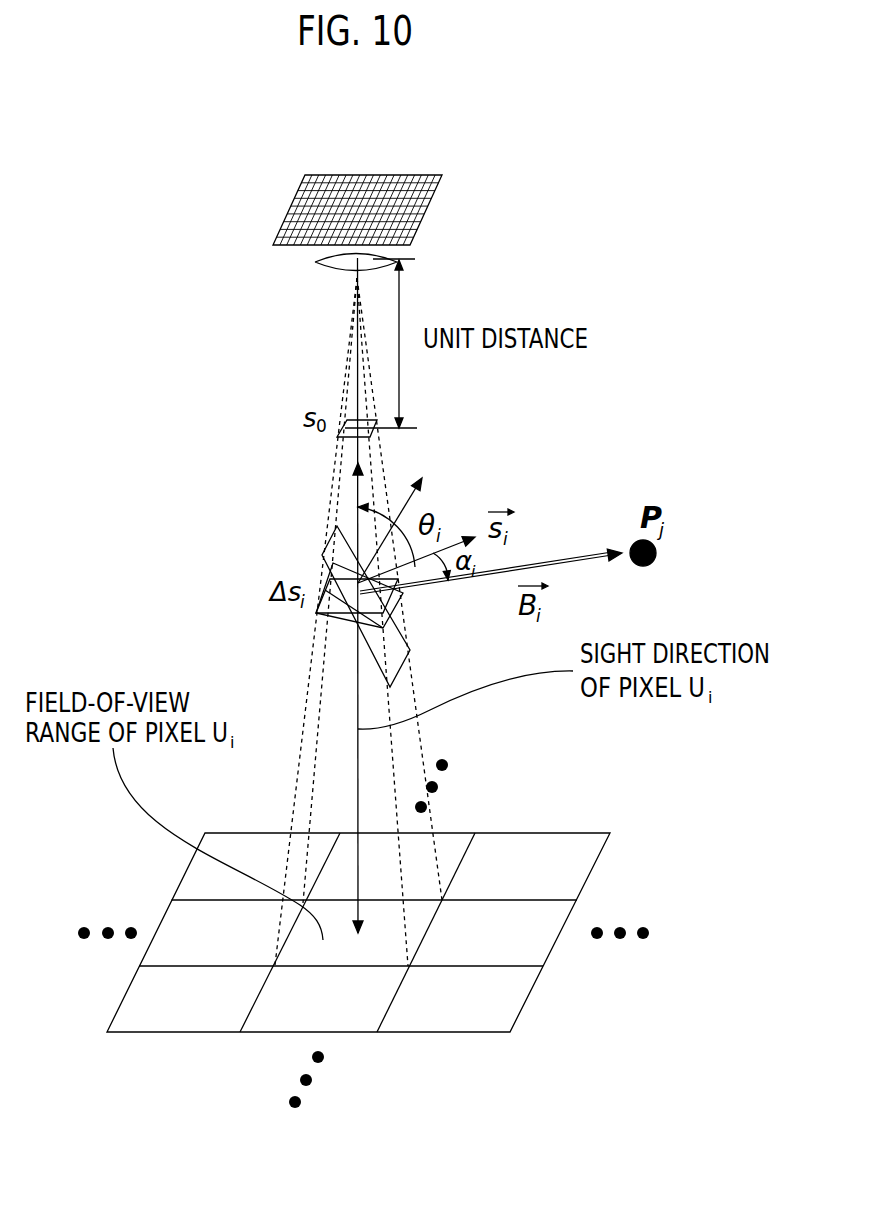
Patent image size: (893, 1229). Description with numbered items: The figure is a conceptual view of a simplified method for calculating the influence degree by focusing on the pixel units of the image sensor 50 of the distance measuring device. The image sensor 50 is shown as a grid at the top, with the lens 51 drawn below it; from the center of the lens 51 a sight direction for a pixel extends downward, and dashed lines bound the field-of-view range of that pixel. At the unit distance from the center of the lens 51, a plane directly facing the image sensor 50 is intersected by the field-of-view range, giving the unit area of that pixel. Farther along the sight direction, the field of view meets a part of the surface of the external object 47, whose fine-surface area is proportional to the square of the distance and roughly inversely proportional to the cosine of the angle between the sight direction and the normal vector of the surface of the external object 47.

The image sensor 50 is at (413, 177).
The lens 51 is at (332, 264).
The external object 47 is at (332, 530).